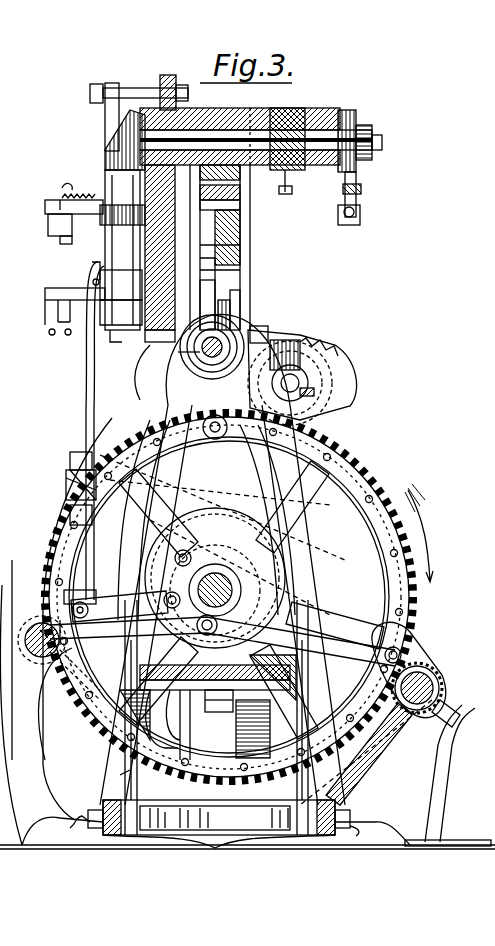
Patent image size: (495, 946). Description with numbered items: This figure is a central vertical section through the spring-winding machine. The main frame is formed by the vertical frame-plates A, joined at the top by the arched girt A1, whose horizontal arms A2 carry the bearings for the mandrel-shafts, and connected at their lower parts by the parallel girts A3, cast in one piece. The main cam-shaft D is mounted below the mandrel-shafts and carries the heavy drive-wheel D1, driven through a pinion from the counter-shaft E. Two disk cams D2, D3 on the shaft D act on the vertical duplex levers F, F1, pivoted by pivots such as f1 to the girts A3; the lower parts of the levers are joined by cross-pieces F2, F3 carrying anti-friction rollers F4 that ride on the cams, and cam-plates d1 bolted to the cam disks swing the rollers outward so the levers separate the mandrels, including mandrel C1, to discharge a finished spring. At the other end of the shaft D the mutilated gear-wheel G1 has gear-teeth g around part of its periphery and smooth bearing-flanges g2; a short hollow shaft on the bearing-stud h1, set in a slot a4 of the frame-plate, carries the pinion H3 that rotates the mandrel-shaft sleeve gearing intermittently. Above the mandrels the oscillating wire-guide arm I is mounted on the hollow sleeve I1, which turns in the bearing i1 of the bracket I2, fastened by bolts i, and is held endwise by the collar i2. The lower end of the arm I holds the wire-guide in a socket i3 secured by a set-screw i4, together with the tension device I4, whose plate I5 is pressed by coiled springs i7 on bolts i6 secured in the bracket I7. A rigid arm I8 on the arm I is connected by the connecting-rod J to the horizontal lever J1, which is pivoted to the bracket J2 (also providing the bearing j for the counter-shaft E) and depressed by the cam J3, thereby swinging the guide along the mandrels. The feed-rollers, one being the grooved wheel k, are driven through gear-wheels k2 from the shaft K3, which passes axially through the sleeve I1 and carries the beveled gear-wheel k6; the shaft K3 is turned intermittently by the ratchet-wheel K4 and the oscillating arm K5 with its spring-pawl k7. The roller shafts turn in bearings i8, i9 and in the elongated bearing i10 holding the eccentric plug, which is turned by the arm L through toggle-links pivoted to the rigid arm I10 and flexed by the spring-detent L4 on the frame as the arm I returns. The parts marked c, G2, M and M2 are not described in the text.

The frame-plates A is at (245, 581).
The arched girt or connecting plate A1 is at (220, 188).
The horizontal arms A2 is at (160, 352).
The longitudinal girts or frame pieces A3 is at (103, 806).
The mandrel C1 is at (246, 336).
The bearing cap c is at (185, 356).
The main or cam shaft D is at (232, 570).
The drive-wheel D1 is at (362, 496).
The cam D2 is at (219, 708).
The cam D3 is at (232, 540).
The counter-shaft E is at (442, 688).
The lever F is at (297, 790).
The lever F1 is at (252, 458).
The horizontal cross-piece F2 is at (125, 770).
The horizontal cross-piece F3 is at (168, 725).
The anti-friction rollers F4 is at (207, 640).
The mutilated gear-wheel G1 is at (228, 697).
The casing wall G2 is at (45, 535).
The gear-pinion H3 is at (310, 358).
The oscillating arm I is at (145, 340).
The hollow shaft or sleeve I1 is at (318, 126).
The bracket I2 is at (250, 196).
The tension device I4 is at (75, 306).
The plate I5 is at (200, 296).
The arm or bracket I7 is at (216, 193).
The rigid arm I8 is at (162, 84).
The rigid arm I10 is at (242, 244).
The connecting-rod J is at (105, 125).
The lever J1 is at (115, 615).
The bracket J2 is at (418, 655).
The cam J3 is at (372, 755).
The shaft K3 is at (190, 138).
The ratchet-wheel K4 is at (352, 114).
The oscillating arm K5 is at (345, 190).
The arm L is at (74, 227).
The spring-detent L4 is at (200, 260).
The slide block M is at (214, 309).
The slide plate M2 is at (237, 309).
The slots a4 is at (300, 390).
The cam-plate d1 is at (24, 642).
The pivot f1 is at (217, 832).
The gear-teeth g is at (52, 492).
The bearing-flanges g2 is at (360, 478).
The bearing-stud h1 is at (310, 396).
The bolts i is at (112, 220).
The bearing i1 is at (252, 129).
The collar i2 is at (287, 143).
The socket i3 is at (114, 205).
The set-screw i4 is at (77, 198).
The bolts i6 is at (155, 342).
The coiled springs i7 is at (76, 333).
The bearing i8 is at (121, 297).
The bearing i9 is at (54, 341).
The elongated bearing i10 is at (87, 282).
The bearing j is at (445, 700).
The grooved wheel k is at (115, 342).
The gear-wheel k2 is at (89, 268).
The beveled gear-wheel k6 is at (348, 218).
The spring-pawl k7 is at (361, 188).